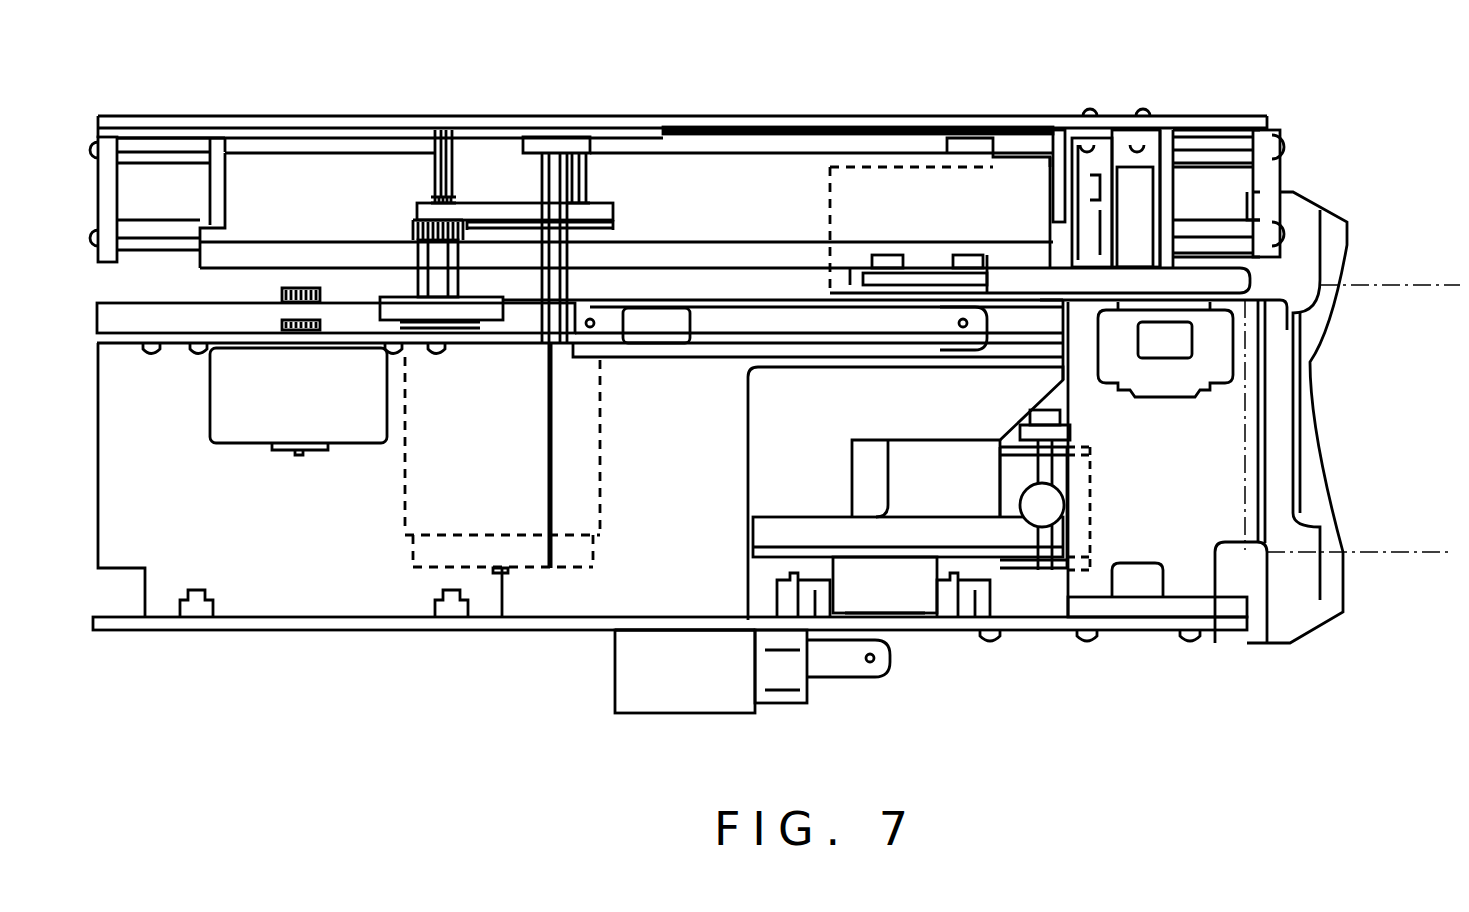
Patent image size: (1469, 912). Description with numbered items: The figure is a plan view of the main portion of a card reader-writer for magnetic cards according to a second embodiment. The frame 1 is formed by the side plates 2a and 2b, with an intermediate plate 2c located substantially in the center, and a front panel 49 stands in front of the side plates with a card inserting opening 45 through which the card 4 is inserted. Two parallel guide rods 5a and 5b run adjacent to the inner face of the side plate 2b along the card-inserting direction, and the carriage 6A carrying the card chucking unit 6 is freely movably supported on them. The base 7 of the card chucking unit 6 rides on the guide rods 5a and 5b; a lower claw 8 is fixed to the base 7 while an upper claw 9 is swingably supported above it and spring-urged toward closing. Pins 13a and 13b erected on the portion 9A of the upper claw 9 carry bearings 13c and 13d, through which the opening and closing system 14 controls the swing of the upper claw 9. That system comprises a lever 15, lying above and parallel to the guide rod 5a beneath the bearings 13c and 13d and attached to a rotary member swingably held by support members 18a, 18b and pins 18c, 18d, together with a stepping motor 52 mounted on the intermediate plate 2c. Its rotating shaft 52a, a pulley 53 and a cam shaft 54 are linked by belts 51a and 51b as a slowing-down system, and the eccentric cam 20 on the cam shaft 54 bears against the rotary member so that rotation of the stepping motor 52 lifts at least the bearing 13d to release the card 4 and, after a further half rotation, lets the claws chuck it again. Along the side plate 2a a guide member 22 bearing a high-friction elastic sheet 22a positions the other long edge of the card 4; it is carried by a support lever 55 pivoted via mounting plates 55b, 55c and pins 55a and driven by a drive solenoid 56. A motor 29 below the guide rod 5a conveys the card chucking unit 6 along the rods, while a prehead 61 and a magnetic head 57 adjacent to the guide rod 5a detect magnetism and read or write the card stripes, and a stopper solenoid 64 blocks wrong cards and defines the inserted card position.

The frame 1 is at (560, 632).
The side plate 2a is at (686, 631).
The side plate 2b is at (761, 122).
The intermediate plate 2c is at (146, 345).
The card 4 is at (1376, 290).
The guide rod 5a is at (1222, 138).
The guide rod 5b is at (1218, 250).
The card chucking unit 6 is at (830, 193).
The carriage 6A is at (1013, 143).
The base 7 is at (1062, 165).
The lower claw 8 is at (1096, 302).
The upper claw 9 is at (1098, 282).
The portion of the upper claw 9A is at (932, 278).
The pin 13a is at (862, 270).
The pin 13b is at (970, 256).
The bearing 13c is at (888, 255).
The bearing 13d is at (987, 270).
The opening and closing system 14 is at (413, 177).
The lever 15 is at (733, 255).
The support member 18a is at (224, 160).
The support member 18b is at (1115, 138).
The pin 18c is at (226, 195).
The pin 18d is at (1058, 200).
The eccentric cam 20 is at (553, 140).
The guide member 22 is at (808, 528).
The elastic sheet 22a is at (755, 550).
The motor 29 is at (432, 504).
The card inserting opening 45 is at (1340, 413).
The front panel 49 is at (1268, 180).
The belt 51a is at (348, 316).
The belt 51b is at (481, 207).
The stepping motor 52 is at (253, 435).
The rotating shaft 52a is at (282, 296).
The pulley 53 is at (413, 262).
The cam shaft 54 is at (573, 170).
The support lever 55 is at (905, 603).
The pin 55a is at (1010, 605).
The mounting plate 55b is at (950, 612).
The mounting plate 55c is at (770, 612).
The drive solenoid 56 is at (687, 714).
The magnetic head 57 is at (670, 346).
The prehead 61 is at (1170, 350).
The stopper solenoid 64 is at (1003, 483).